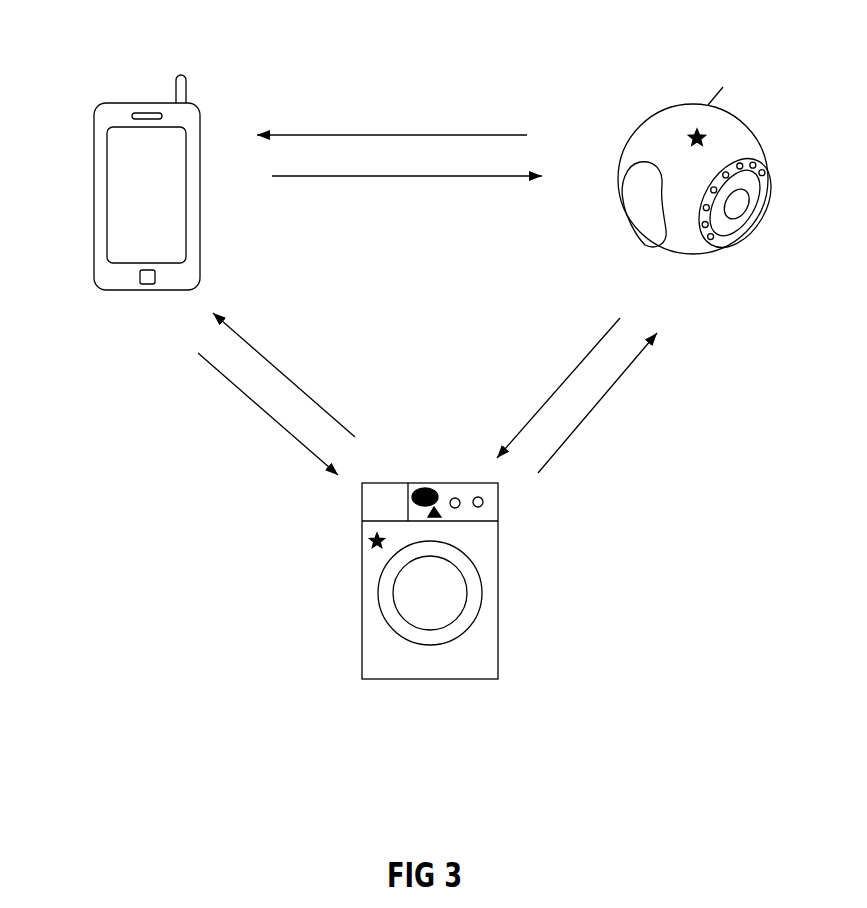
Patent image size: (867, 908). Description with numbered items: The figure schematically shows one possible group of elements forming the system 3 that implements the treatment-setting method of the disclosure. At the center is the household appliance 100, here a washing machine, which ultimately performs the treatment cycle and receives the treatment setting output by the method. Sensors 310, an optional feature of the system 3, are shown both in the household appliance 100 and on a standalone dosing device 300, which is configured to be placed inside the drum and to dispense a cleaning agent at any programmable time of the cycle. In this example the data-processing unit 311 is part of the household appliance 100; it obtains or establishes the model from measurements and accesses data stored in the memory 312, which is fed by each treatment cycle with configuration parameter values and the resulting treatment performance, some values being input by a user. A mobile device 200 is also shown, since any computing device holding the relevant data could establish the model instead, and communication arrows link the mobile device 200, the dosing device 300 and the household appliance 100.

The system 3 is at (687, 438).
The household appliance 100 is at (405, 679).
The mobile device 200 is at (120, 102).
The dosing device 300 is at (709, 146).
The sensors 310 is at (683, 138).
The data-processing unit 311 is at (443, 495).
The memory 312 is at (445, 513).